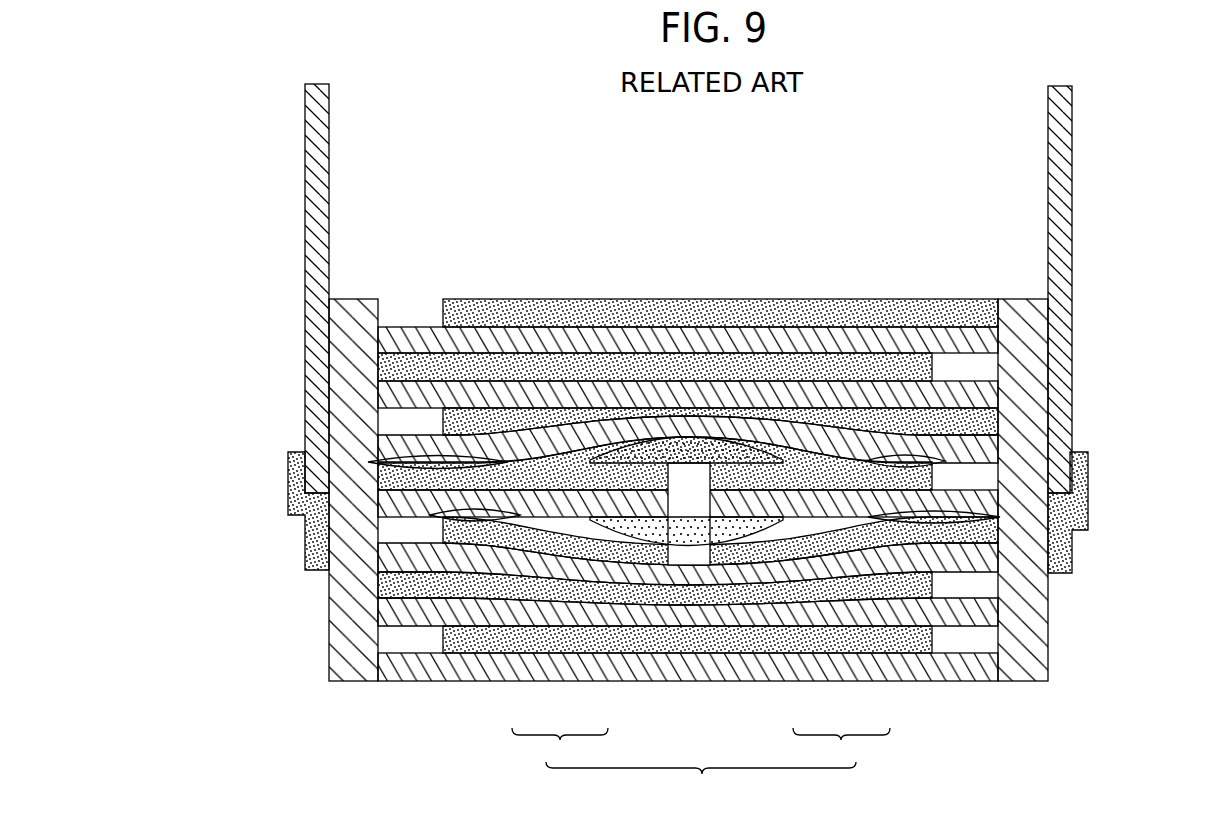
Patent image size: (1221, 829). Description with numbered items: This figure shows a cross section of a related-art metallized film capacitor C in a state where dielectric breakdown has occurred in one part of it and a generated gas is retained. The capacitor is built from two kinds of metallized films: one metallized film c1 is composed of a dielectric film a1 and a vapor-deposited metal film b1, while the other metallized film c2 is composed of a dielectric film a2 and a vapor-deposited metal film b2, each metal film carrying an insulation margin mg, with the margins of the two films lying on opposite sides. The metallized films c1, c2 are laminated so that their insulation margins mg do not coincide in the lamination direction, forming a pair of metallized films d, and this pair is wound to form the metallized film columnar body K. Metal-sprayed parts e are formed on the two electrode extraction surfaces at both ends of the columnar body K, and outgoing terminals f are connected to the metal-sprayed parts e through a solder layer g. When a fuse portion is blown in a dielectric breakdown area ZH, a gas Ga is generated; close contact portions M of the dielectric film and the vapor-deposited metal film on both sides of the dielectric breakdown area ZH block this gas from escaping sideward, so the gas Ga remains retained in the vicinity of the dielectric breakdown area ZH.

The metallized film capacitor C is at (723, 422).
The metallized film columnar body K is at (692, 461).
The outgoing terminal f is at (313, 182).
The metal-sprayed part e is at (345, 607).
The solder layer g is at (300, 498).
The insulation margin mg is at (389, 432).
The close contact portion M is at (421, 445).
The gas Ga is at (672, 455).
The dielectric breakdown area ZH is at (688, 490).
The dielectric film a1 is at (810, 620).
The vapor-deposited metal film b1 is at (860, 592).
The metallized film c1 is at (841, 747).
The dielectric film a2 is at (532, 665).
The vapor-deposited metal film b2 is at (588, 655).
The metallized film c2 is at (560, 747).
The pair of metallized films d is at (701, 781).